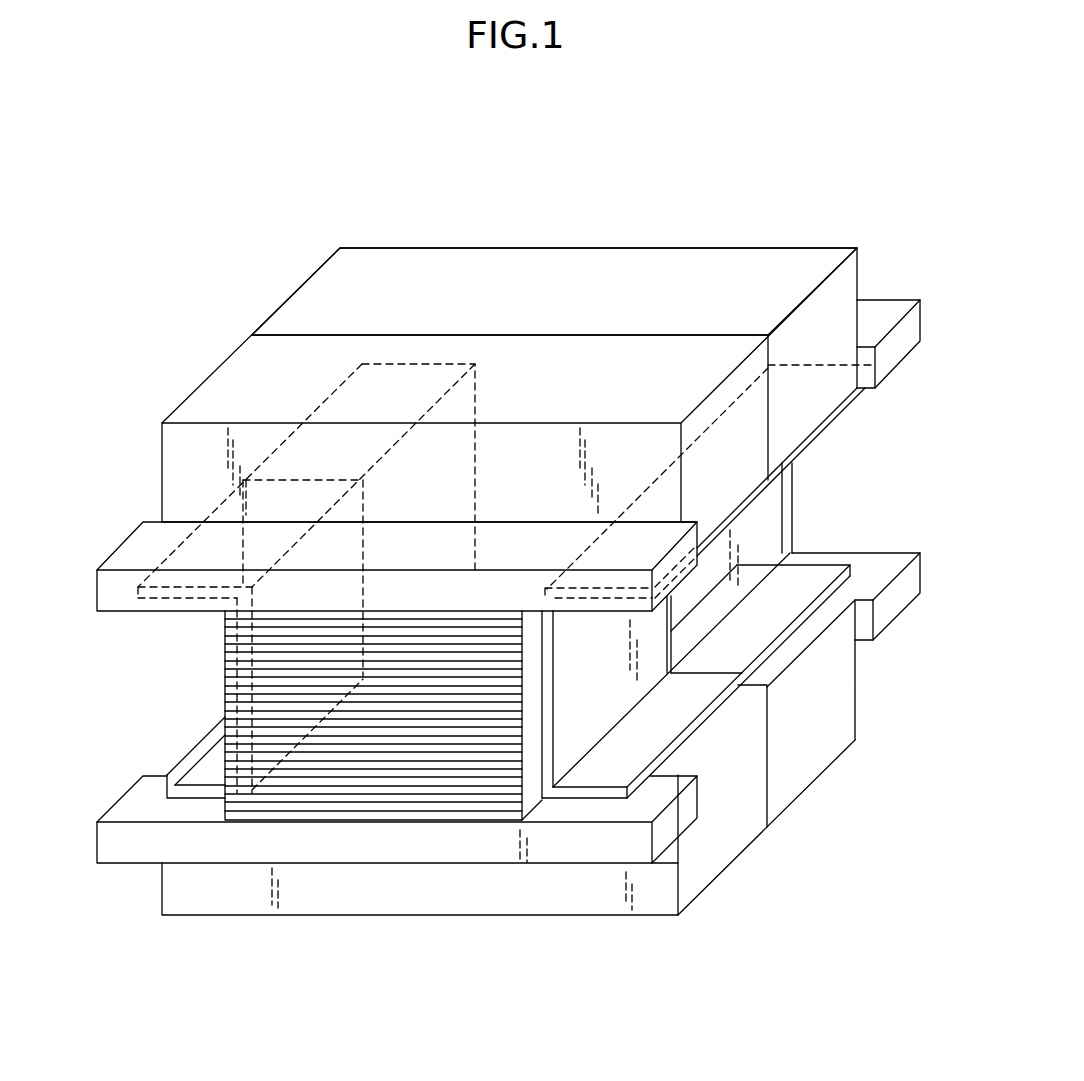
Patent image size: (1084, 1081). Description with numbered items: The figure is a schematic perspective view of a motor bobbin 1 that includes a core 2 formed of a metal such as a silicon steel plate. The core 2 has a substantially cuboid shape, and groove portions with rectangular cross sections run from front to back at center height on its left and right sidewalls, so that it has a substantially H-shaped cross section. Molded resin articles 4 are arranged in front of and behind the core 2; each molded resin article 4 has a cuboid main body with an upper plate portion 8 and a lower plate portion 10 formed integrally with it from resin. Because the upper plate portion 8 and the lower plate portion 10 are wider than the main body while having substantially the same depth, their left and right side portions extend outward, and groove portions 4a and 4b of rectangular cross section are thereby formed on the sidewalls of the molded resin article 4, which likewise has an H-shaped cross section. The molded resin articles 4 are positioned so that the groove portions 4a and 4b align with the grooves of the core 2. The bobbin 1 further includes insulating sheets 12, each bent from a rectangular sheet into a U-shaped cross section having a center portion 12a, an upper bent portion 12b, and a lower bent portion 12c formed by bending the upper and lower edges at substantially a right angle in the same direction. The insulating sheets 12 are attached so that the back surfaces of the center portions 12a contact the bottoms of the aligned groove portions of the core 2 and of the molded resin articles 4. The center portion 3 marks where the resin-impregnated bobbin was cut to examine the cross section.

The motor bobbin 1 is at (650, 191).
The core 2 is at (478, 268).
The center portion 3 is at (312, 337).
The molded resin article 4 is at (873, 318).
The groove portion 4a is at (810, 496).
The groove portion 4b is at (190, 676).
The upper plate portion 8 is at (118, 597).
The lower plate portion 10 is at (118, 848).
The insulating sheet 12 is at (218, 752).
The center portion 12a is at (690, 625).
The upper bent portion 12b is at (812, 450).
The lower bent portion 12c is at (672, 711).